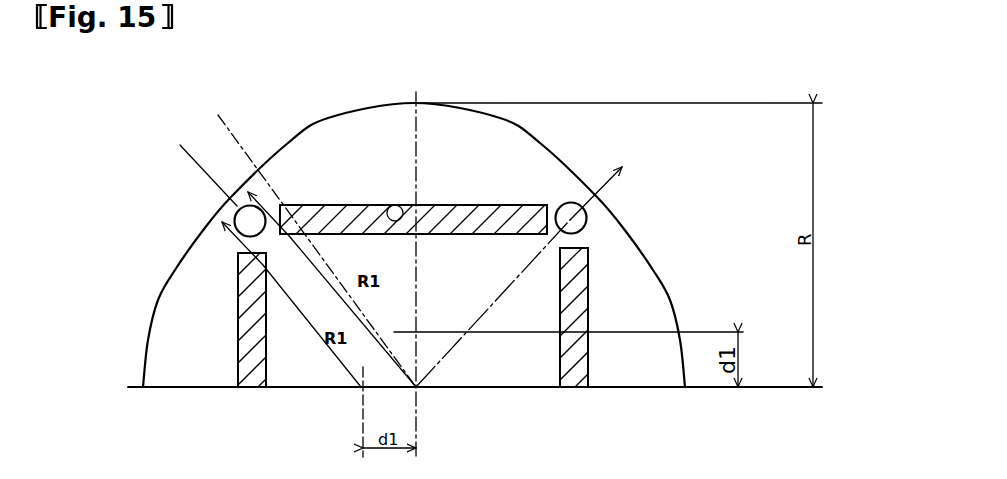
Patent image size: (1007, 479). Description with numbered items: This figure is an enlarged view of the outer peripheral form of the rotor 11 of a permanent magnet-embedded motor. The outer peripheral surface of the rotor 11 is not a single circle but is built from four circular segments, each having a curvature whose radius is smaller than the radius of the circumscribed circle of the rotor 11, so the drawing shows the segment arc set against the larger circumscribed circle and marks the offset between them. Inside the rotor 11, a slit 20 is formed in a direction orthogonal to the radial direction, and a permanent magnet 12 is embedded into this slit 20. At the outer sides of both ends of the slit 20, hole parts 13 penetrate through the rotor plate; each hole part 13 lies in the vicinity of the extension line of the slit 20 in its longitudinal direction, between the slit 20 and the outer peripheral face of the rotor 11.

The rotor 11 is at (657, 288).
The permanent magnet 12 is at (350, 205).
The hole part 13 is at (235, 218).
The slit 20 is at (383, 205).